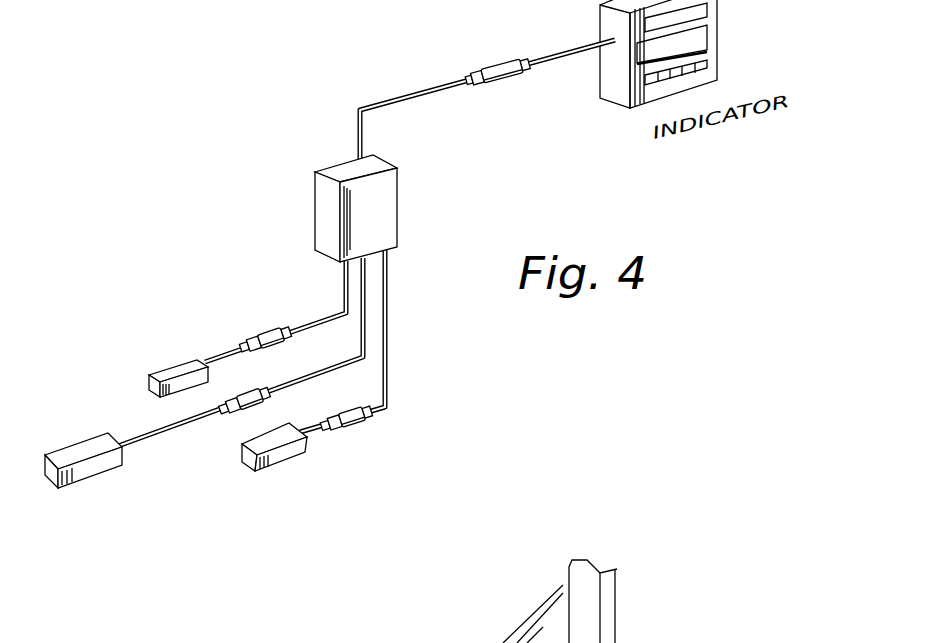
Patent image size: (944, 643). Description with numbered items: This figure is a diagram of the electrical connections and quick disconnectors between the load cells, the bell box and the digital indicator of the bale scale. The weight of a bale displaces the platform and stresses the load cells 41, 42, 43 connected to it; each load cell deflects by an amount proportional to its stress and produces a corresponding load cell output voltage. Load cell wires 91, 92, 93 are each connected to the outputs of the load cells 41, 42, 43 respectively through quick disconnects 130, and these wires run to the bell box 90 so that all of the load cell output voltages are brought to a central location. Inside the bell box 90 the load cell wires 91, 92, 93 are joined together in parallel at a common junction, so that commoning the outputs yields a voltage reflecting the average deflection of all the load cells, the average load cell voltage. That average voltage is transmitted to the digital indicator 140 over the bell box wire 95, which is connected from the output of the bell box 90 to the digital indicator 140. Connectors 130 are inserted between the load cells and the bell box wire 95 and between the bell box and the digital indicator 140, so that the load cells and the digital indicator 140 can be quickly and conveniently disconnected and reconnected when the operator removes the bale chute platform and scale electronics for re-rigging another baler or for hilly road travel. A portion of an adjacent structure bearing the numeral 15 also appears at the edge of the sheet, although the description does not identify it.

The load cell 41 is at (152, 385).
The load cell 42 is at (250, 470).
The load cell 43 is at (68, 456).
The bell box 90 is at (350, 210).
The load cell wire 91 is at (314, 321).
The load cell wire 92 is at (389, 357).
The load cell wire 93 is at (280, 388).
The bell box wire 95 is at (425, 94).
The quick disconnect 130 is at (513, 32).
The frame member 15 is at (456, 614).
The digital indicator 140 is at (626, 601).